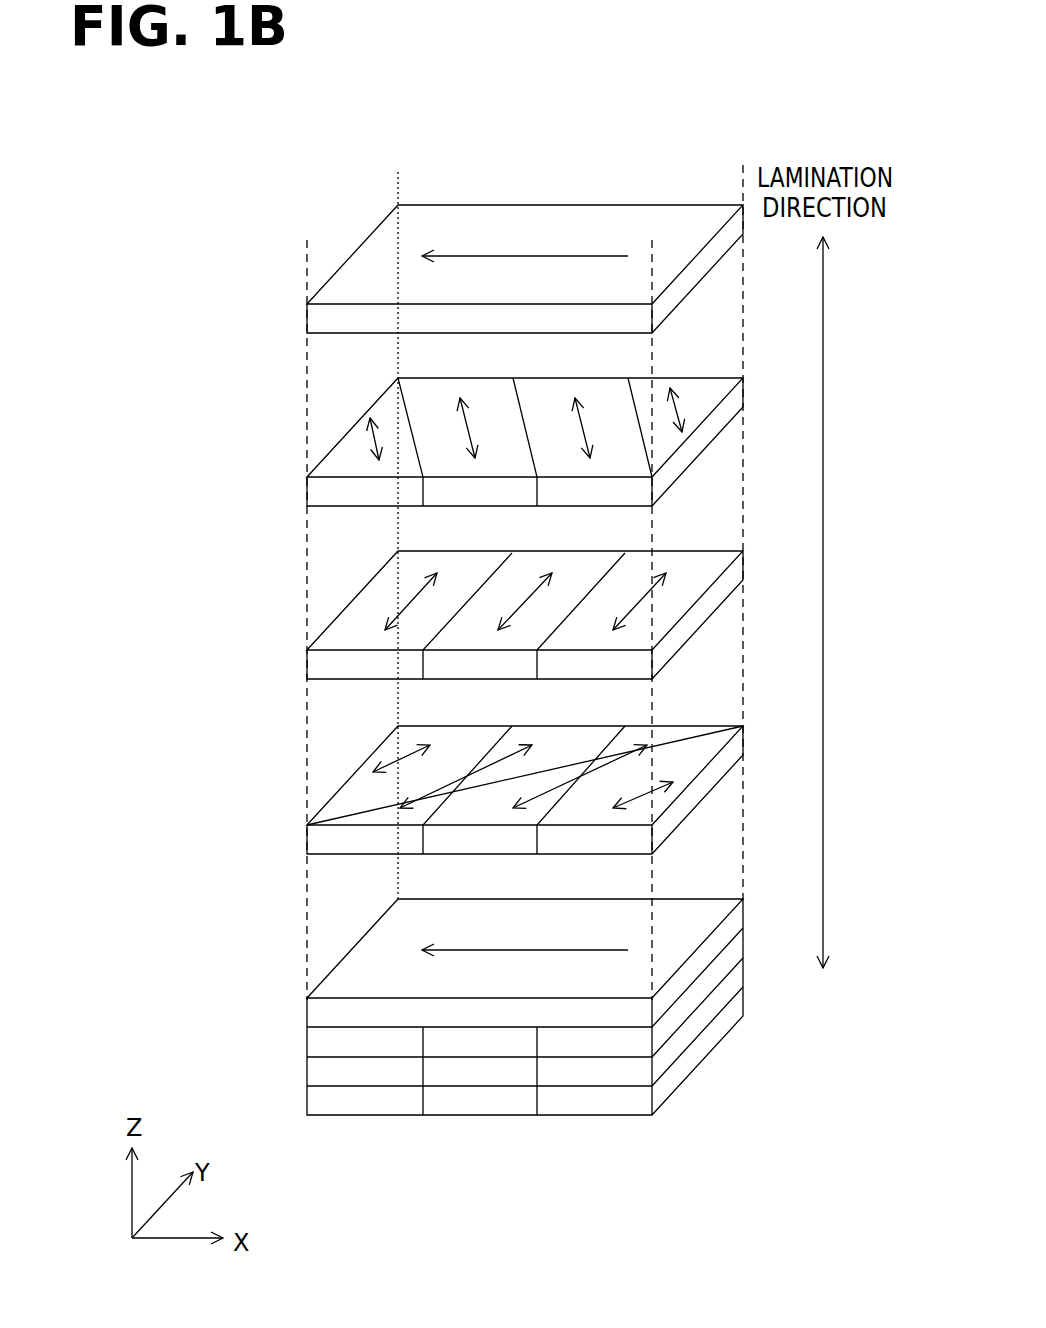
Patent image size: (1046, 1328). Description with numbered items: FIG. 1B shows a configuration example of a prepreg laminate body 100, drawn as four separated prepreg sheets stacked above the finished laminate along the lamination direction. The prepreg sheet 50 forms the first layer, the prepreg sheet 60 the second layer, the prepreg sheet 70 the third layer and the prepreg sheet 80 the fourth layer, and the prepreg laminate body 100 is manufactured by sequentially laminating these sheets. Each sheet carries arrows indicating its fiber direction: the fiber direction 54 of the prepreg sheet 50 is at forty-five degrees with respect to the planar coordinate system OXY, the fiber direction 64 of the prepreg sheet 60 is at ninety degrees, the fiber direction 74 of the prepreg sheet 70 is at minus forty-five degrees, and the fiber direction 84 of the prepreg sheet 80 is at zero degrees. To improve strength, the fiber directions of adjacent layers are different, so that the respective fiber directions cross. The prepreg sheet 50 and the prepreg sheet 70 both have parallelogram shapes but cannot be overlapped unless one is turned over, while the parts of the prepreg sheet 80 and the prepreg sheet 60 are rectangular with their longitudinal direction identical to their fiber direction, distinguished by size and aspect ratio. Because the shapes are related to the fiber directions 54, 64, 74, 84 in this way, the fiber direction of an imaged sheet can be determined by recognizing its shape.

The prepreg sheet 50 is at (772, 998).
The fiber direction 54 is at (395, 760).
The prepreg sheet 60 is at (313, 668).
The fiber direction 64 is at (412, 602).
The prepreg sheet 70 is at (313, 495).
The fiber direction 74 is at (362, 441).
The prepreg sheet 80 is at (313, 322).
The fiber direction 84 is at (542, 256).
The prepreg laminate body 100 is at (313, 1048).